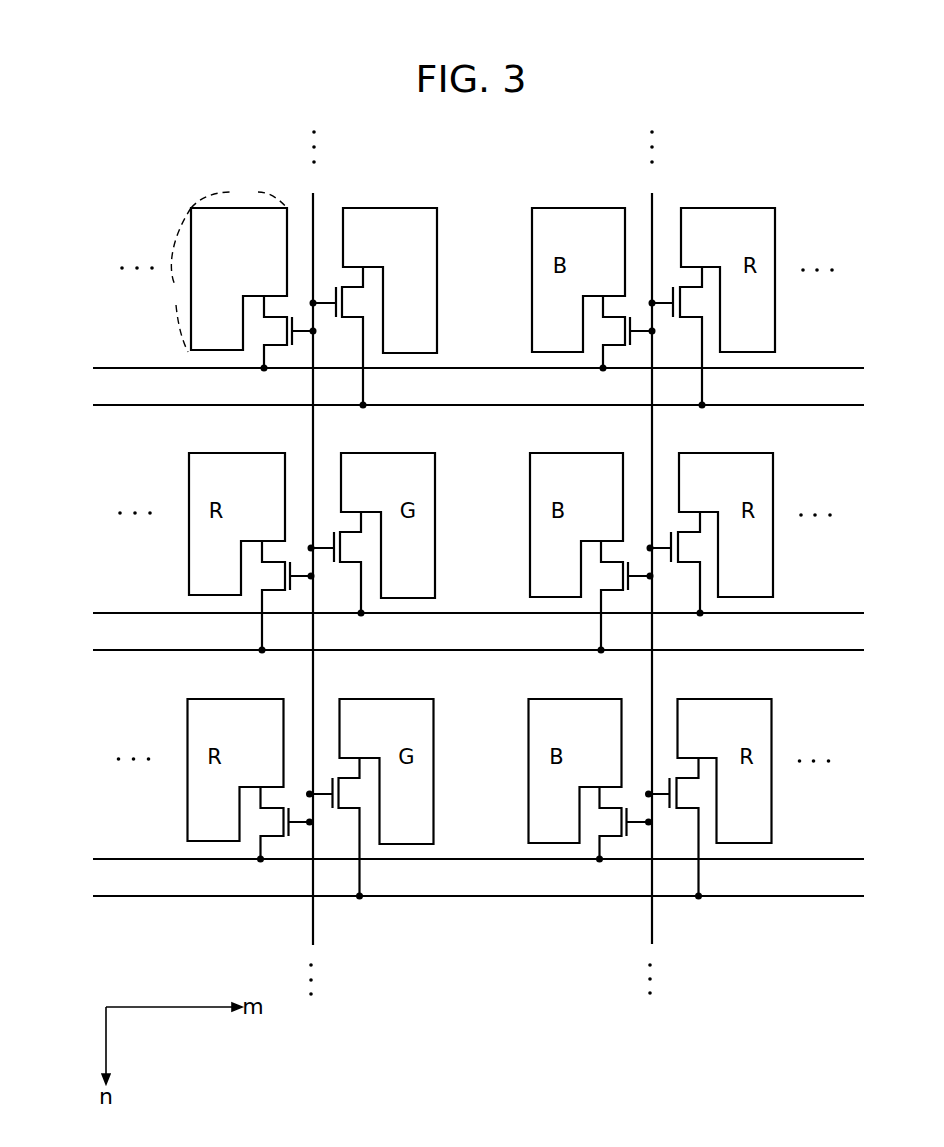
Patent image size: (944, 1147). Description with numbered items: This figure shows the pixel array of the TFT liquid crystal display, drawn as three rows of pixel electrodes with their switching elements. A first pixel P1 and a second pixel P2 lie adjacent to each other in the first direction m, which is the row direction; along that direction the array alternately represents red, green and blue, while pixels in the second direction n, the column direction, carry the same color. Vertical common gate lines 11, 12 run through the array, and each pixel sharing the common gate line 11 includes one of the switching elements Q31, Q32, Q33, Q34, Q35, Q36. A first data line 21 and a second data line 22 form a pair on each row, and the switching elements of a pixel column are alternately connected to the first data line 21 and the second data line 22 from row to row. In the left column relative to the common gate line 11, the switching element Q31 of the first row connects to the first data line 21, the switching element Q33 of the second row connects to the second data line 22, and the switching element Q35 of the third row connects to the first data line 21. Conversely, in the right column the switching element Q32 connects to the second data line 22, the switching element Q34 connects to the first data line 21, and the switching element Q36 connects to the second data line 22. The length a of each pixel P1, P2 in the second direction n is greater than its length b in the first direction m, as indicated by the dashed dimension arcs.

The common gate line 11 is at (314, 563).
The common gate line 12 is at (652, 562).
The first data line 21 is at (466, 613).
The second data line 22 is at (466, 650).
The switching element Q31 is at (289, 334).
The switching element Q32 is at (338, 338).
The switching element Q33 is at (287, 597).
The switching element Q34 is at (336, 564).
The switching element Q35 is at (285, 825).
The switching element Q36 is at (334, 829).
The first pixel P1 is at (239, 279).
The second pixel P2 is at (390, 280).
The length in the second direction a is at (181, 280).
The length in the first direction b is at (239, 194).